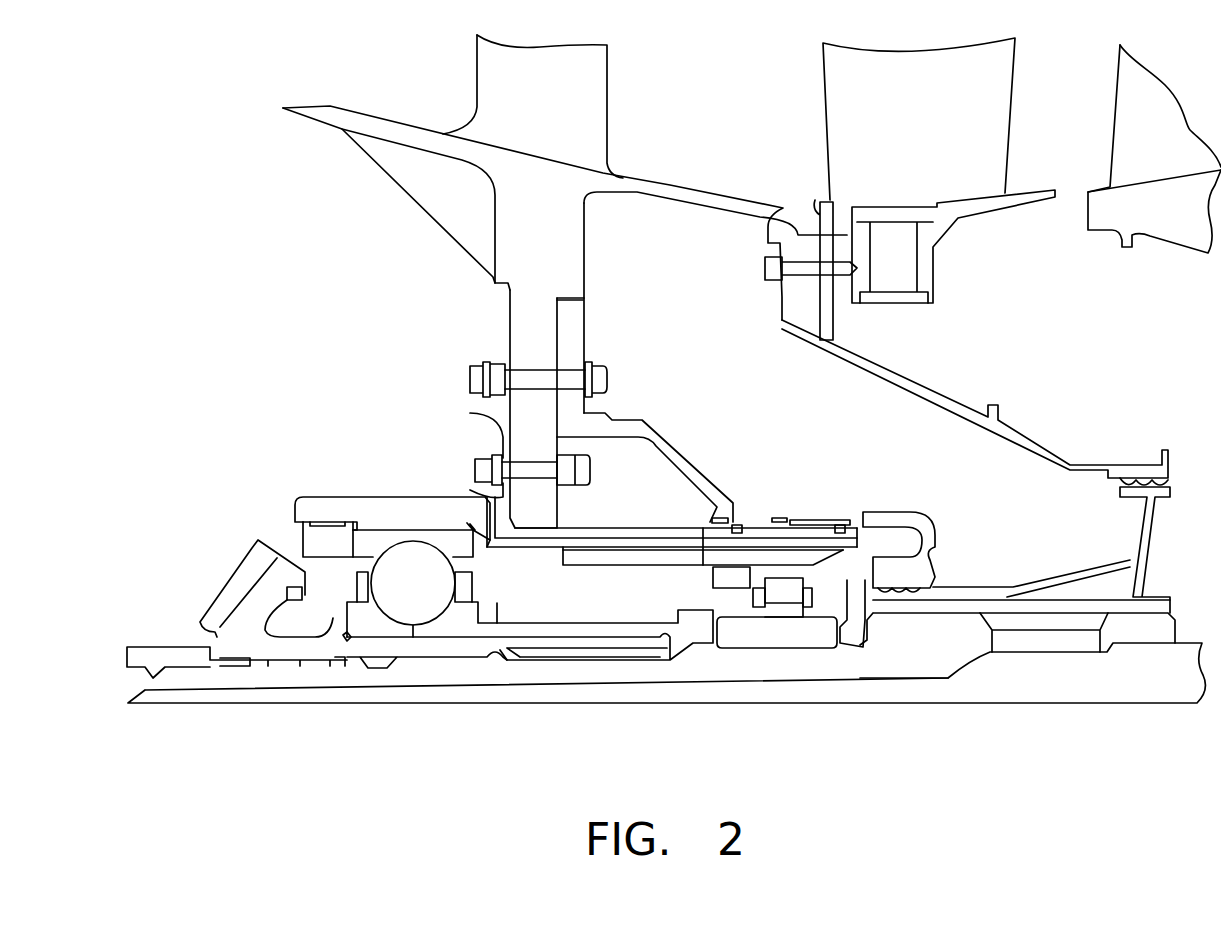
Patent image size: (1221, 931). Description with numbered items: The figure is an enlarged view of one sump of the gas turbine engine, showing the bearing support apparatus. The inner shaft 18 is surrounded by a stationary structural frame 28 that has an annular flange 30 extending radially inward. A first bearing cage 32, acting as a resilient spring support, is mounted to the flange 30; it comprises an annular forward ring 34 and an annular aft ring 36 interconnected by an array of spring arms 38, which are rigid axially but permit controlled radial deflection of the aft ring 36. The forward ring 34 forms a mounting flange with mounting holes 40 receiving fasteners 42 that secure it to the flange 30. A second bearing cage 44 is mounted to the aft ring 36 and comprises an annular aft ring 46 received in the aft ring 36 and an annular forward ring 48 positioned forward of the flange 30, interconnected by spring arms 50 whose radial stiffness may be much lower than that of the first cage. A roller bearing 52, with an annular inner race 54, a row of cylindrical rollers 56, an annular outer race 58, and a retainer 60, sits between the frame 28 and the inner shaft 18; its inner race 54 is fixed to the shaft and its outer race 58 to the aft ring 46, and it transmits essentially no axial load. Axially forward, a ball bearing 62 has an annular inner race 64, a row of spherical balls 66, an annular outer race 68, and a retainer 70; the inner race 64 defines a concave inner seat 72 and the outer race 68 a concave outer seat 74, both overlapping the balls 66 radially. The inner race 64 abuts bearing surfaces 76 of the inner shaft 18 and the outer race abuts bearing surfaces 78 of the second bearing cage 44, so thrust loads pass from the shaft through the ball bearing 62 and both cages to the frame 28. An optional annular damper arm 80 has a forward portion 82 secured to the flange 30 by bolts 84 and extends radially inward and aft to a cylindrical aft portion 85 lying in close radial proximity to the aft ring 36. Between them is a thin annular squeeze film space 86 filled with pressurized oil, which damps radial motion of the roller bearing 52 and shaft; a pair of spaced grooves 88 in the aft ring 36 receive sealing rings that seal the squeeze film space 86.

The inner shaft 18 is at (403, 668).
The stationary structural frame 28 is at (650, 162).
The annular flange 30 is at (520, 322).
The first bearing cage 32 is at (593, 497).
The forward ring 34 is at (493, 497).
The aft ring 36 is at (713, 533).
The spring arms 38 is at (613, 537).
The mounting holes 40 is at (500, 440).
The fasteners 42 is at (493, 457).
The second bearing cage 44 is at (568, 565).
The aft ring 46 is at (707, 563).
The forward ring 48 is at (323, 507).
The spring arms 50 is at (620, 560).
The roller bearing 52 is at (713, 598).
The inner race 54 is at (737, 637).
The rollers 56 is at (784, 597).
The outer race 58 is at (815, 553).
The retainer 60 is at (758, 593).
The ball bearing 62 is at (480, 582).
The inner race 64 is at (442, 628).
The balls 66 is at (430, 597).
The outer race 68 is at (387, 530).
The retainer 70 is at (363, 590).
The inner seat 72 is at (392, 610).
The outer seat 74 is at (407, 537).
The bearing surfaces 76 is at (337, 618).
The bearing surfaces 78 is at (472, 530).
The damper arm 80 is at (717, 420).
The forward portion 82 is at (643, 423).
The bolts 84 is at (597, 368).
The aft portion 85 is at (743, 513).
The squeeze film space 86 is at (807, 517).
The grooves 88 is at (735, 507).